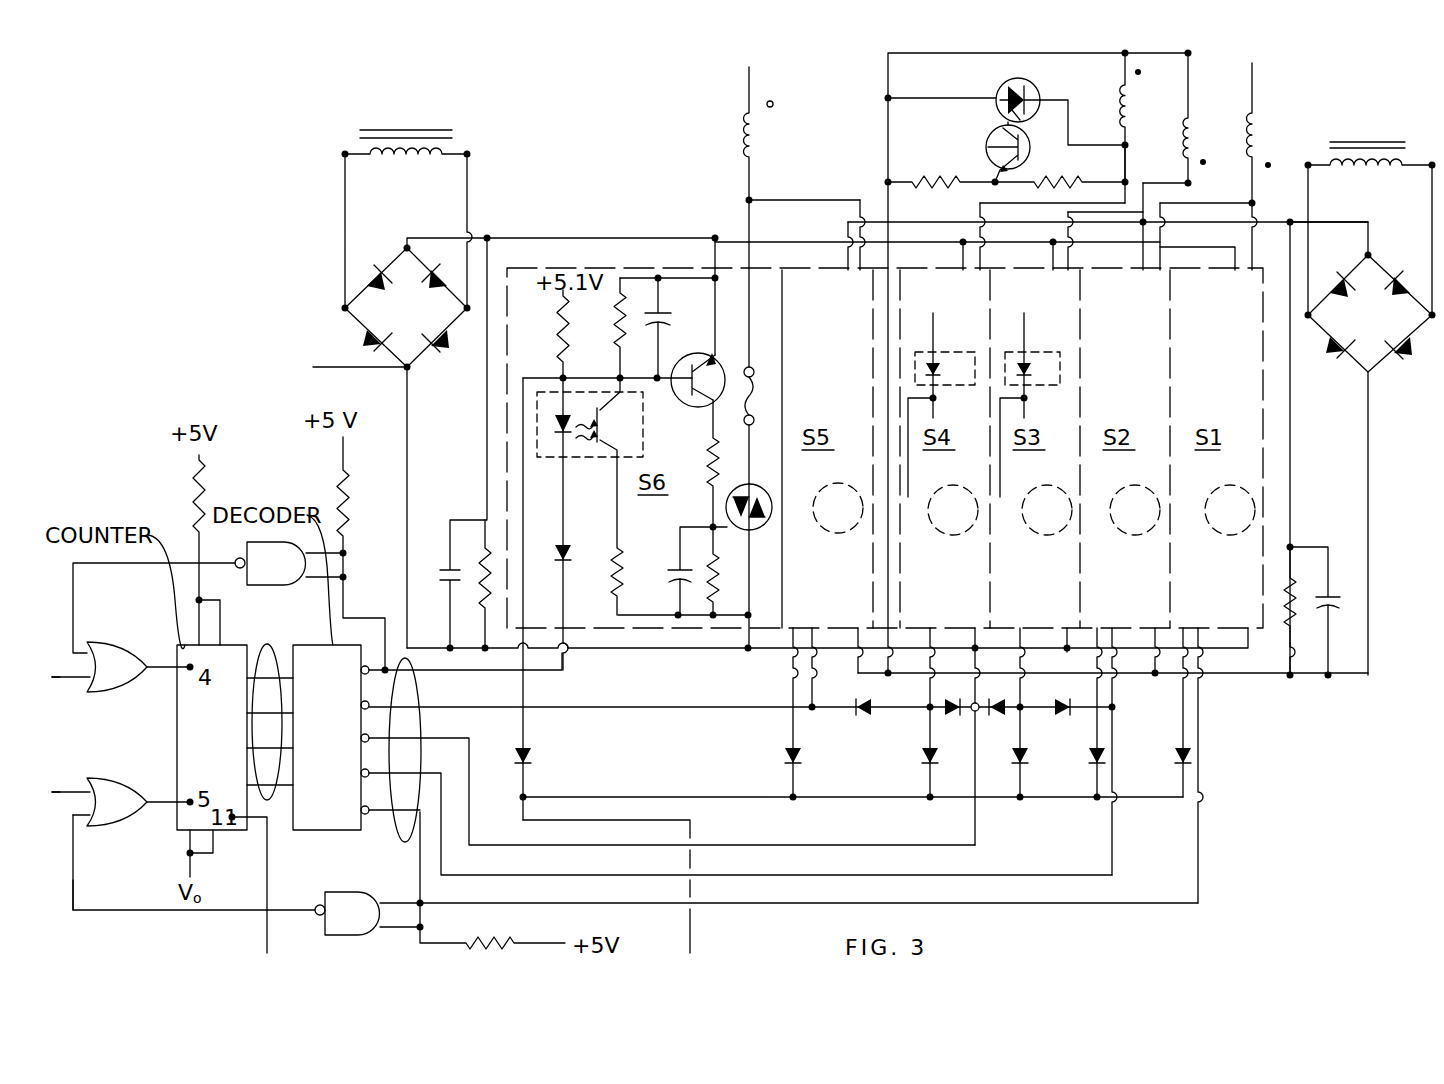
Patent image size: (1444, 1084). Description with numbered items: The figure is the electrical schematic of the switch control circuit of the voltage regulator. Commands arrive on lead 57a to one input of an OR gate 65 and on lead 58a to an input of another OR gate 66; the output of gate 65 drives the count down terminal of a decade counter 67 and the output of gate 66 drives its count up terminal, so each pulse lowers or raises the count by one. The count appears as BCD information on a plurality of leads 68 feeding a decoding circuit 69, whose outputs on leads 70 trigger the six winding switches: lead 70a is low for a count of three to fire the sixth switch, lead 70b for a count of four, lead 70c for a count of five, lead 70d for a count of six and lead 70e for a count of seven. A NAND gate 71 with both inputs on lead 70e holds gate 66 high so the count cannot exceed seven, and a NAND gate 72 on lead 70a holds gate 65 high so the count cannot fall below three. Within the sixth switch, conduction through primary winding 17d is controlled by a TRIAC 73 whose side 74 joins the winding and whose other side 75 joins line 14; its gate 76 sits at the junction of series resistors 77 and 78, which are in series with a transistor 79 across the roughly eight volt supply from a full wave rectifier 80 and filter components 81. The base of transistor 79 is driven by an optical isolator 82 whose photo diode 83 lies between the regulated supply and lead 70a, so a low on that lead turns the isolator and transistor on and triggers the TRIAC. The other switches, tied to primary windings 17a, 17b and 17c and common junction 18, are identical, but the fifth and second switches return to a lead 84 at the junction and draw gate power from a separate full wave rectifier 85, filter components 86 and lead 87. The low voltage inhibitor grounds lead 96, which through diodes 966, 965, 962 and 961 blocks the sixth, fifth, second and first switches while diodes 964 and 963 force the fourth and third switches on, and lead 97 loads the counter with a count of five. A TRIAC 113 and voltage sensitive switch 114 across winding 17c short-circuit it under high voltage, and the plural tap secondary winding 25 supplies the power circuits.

The conducting line 14 is at (318, 366).
The primary winding 17a is at (1258, 130).
The primary winding 17b is at (1195, 130).
The primary winding 17c is at (1120, 104).
The primary winding 17d is at (758, 128).
The common junction 18 is at (1158, 60).
The plural tap secondary winding 25 is at (470, 136).
The lead 57a is at (62, 680).
The lead 58a is at (70, 776).
The OR gate 65 is at (133, 640).
The OR gate 66 is at (107, 828).
The decade counter 67 is at (220, 745).
The plurality of leads 68 is at (272, 660).
The decoding circuit 69 is at (340, 745).
The leads 70 is at (400, 840).
The lead 70a is at (487, 676).
The lead 70b is at (622, 708).
The lead 70c is at (440, 735).
The lead 70d is at (460, 772).
The lead 70e is at (418, 880).
The NAND gate 71 is at (330, 933).
The NAND gate 72 is at (276, 585).
The TRIAC 73 is at (770, 522).
The TRIAC side 74 is at (748, 218).
The TRIAC other side 75 is at (749, 583).
The gate 76 is at (725, 532).
The resistor 77 is at (710, 458).
The resistor 78 is at (698, 565).
The transistor 79 is at (720, 365).
The full wave rectifier 80 is at (423, 313).
The filter components 81 is at (477, 622).
The optical isolator 82 is at (583, 460).
The photo diode 83 is at (562, 437).
The lead 84 is at (1255, 680).
The full wave rectifier 85 is at (1385, 320).
The filter components 86 is at (1318, 646).
The lead 87 is at (1332, 222).
The lead 96 is at (690, 930).
The lead 97 is at (263, 946).
The TRIAC 113 is at (1000, 82).
The voltage sensitive switch 114 is at (987, 140).
The diode 961 is at (1190, 753).
The diode 962 is at (1107, 753).
The diode 963 is at (1027, 753).
The diode 964 is at (920, 753).
The diode 965 is at (783, 754).
The diode 966 is at (530, 752).